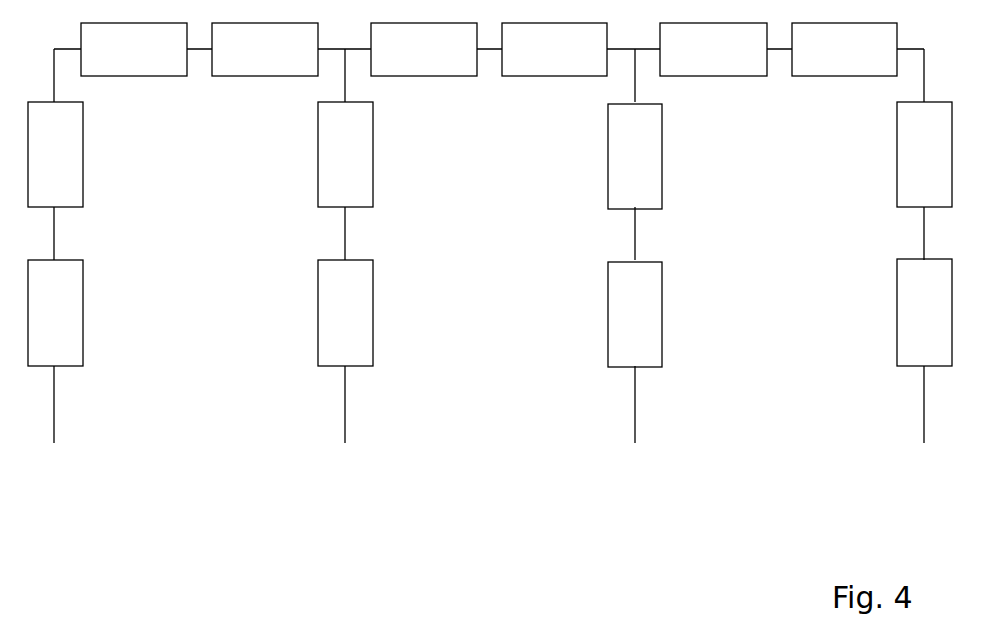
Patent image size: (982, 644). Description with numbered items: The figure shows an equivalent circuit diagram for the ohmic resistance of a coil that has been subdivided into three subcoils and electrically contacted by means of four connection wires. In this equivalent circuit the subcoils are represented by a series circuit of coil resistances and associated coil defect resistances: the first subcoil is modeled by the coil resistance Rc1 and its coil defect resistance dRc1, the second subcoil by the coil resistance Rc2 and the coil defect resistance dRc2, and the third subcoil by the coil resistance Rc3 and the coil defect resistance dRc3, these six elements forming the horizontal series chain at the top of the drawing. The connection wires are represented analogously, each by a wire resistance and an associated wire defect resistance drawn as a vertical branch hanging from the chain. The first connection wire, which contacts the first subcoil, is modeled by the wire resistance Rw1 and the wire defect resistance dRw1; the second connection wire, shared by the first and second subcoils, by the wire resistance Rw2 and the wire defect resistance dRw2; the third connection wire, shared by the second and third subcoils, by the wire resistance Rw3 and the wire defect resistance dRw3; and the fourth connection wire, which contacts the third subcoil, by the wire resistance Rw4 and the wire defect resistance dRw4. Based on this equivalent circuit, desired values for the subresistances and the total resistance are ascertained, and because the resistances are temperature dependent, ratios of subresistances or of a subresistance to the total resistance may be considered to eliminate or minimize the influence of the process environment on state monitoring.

The coil resistance Rc1 is at (134, 49).
The coil defect resistance dRc1 is at (265, 49).
The coil resistance Rc2 is at (424, 49).
The coil defect resistance dRc2 is at (554, 49).
The coil resistance Rc3 is at (713, 49).
The coil defect resistance dRc3 is at (844, 49).
The wire resistance Rw1 is at (55, 154).
The wire defect resistance dRw1 is at (55, 313).
The wire resistance Rw2 is at (345, 154).
The wire defect resistance dRw2 is at (345, 313).
The wire resistance Rw3 is at (635, 156).
The wire defect resistance dRw3 is at (635, 314).
The wire resistance Rw4 is at (924, 154).
The wire defect resistance dRw4 is at (924, 312).